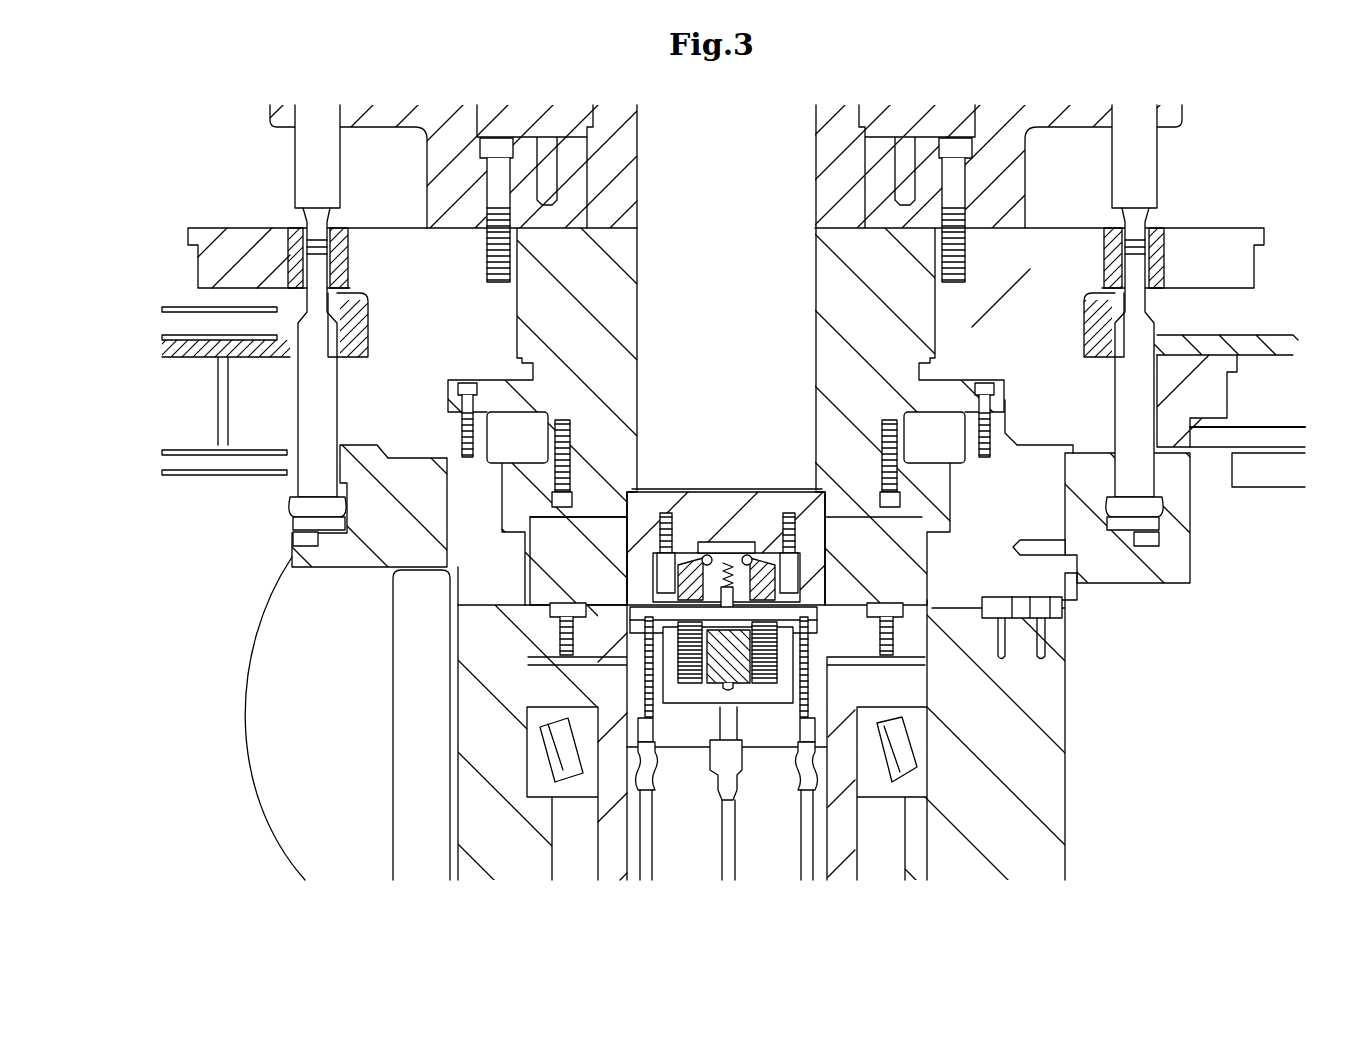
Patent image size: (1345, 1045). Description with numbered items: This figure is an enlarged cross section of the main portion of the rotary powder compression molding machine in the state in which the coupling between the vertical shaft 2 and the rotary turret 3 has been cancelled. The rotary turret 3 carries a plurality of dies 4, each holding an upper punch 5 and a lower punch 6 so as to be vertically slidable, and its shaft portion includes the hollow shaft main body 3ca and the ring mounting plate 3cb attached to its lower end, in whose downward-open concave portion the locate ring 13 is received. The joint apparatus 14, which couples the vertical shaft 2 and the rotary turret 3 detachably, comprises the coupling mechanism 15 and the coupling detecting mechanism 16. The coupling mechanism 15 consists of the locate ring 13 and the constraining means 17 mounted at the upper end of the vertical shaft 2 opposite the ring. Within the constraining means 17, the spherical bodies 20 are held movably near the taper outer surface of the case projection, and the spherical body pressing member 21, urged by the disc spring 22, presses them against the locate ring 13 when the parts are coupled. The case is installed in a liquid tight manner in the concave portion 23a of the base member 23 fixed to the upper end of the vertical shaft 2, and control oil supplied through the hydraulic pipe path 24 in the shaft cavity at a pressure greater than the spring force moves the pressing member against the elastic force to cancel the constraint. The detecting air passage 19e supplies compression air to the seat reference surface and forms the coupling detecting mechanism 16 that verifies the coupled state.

The shaft main body 3ca is at (813, 272).
The upper punch 5 is at (310, 142).
The rotary turret 3 is at (238, 222).
The die 4 is at (297, 247).
The lower punch 6 is at (317, 347).
The locate ring 13 is at (688, 560).
The detecting air passage 19e is at (640, 605).
The spherical body 20 is at (767, 547).
The ring mounting plate 3cb is at (555, 563).
The concave portion 23a is at (655, 690).
The base member 23 is at (700, 713).
The coupling mechanism 15 is at (820, 568).
The coupling detecting mechanism 16 is at (808, 613).
The joint apparatus 14 is at (1174, 637).
The disc spring 22 is at (800, 690).
The vertical shaft 2 is at (874, 832).
The spherical body pressing member 21 is at (703, 697).
The hydraulic pipe path 24 is at (722, 850).
The constraining means 17 is at (768, 769).